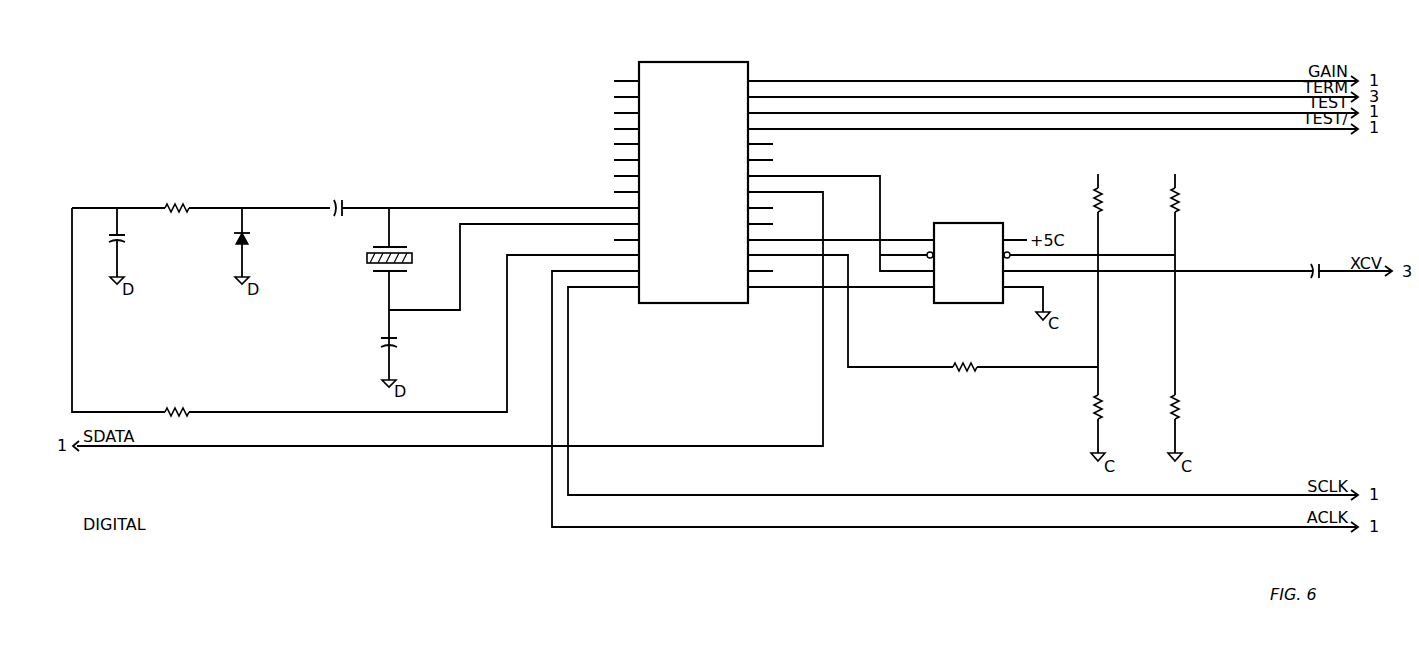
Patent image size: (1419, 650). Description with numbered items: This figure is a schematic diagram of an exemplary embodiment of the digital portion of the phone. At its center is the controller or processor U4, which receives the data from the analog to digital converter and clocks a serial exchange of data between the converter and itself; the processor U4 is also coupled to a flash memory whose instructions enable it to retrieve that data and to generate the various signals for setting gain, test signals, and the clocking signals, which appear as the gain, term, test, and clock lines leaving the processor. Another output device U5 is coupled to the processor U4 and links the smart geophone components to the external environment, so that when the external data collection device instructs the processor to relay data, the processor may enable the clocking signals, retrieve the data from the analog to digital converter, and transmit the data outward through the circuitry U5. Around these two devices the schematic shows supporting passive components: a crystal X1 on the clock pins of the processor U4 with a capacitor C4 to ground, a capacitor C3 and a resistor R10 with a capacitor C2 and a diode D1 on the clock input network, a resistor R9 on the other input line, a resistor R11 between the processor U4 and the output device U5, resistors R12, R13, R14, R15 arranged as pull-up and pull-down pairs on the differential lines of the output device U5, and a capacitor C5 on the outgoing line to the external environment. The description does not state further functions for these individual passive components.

The controller or processor U4 is at (693, 160).
The output device U5 is at (964, 240).
The resistor 1M0 5% R9 is at (172, 404).
The resistor 1M0 5% R10 is at (172, 196).
The resistor 49K9 1% R11 is at (959, 360).
The resistor 10K0 1% R12 is at (1107, 175).
The resistor 10K0 1% R13 is at (1107, 413).
The resistor 10K0 1% R14 is at (1184, 175).
The resistor 10K0 1% R15 is at (1184, 413).
The capacitor 1U0 C2 is at (134, 238).
The capacitor 100P C3 is at (340, 205).
The capacitor 18P C4 is at (406, 352).
The capacitor 1N0 C5 is at (1313, 270).
The zener diode ZMV934A D1 is at (280, 238).
The crystal ECS X1 is at (404, 239).